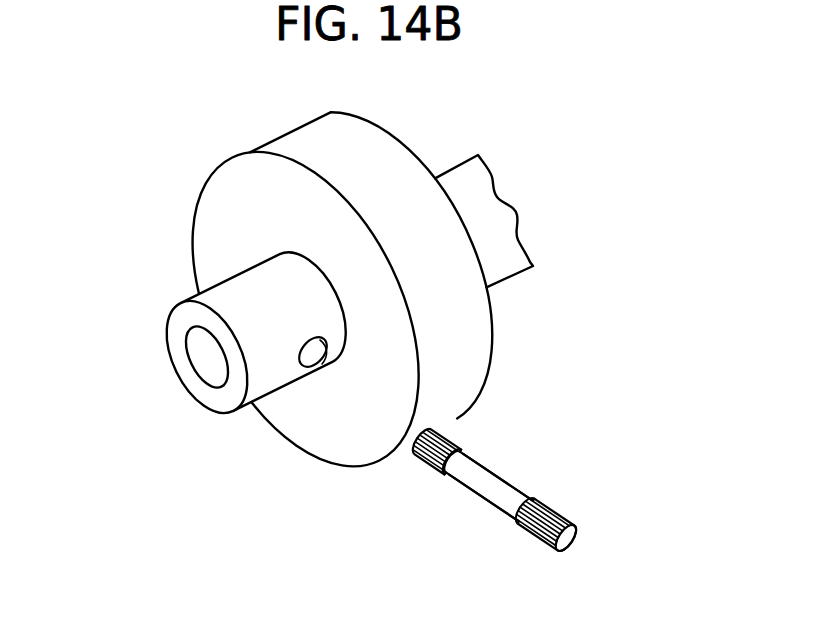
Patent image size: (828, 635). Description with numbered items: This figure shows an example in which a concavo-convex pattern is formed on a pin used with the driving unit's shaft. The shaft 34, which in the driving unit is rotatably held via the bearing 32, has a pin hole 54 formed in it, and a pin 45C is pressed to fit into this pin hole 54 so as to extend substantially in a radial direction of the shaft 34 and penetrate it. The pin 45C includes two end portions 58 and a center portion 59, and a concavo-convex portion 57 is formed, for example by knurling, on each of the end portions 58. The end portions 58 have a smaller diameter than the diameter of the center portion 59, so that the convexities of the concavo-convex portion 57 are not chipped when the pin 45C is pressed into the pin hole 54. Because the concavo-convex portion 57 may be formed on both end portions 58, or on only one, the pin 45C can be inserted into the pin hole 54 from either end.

The bearing 32 is at (492, 322).
The shaft 34 is at (186, 392).
The pin hole 54 is at (313, 353).
The pin 45C is at (493, 491).
The concavo-convex portion 57 is at (503, 472).
The end portion 58 is at (484, 496).
The center portion 59 is at (483, 496).